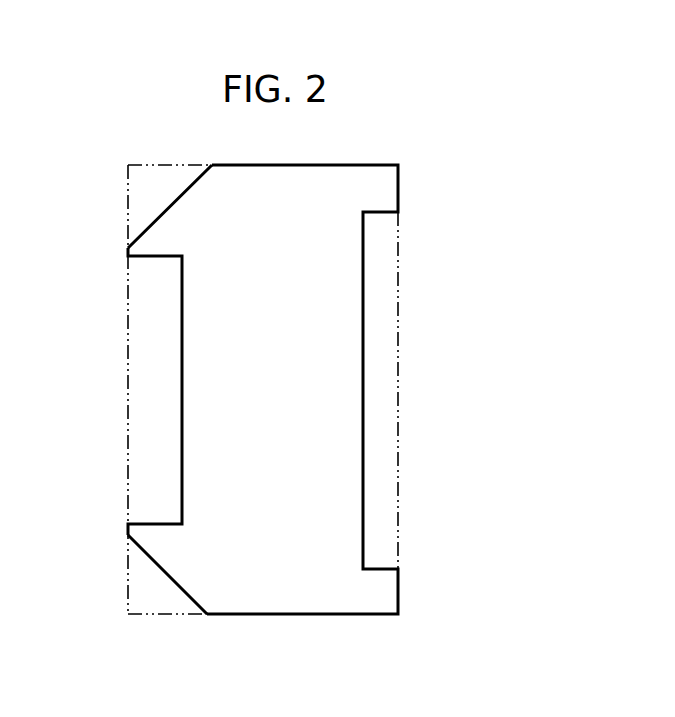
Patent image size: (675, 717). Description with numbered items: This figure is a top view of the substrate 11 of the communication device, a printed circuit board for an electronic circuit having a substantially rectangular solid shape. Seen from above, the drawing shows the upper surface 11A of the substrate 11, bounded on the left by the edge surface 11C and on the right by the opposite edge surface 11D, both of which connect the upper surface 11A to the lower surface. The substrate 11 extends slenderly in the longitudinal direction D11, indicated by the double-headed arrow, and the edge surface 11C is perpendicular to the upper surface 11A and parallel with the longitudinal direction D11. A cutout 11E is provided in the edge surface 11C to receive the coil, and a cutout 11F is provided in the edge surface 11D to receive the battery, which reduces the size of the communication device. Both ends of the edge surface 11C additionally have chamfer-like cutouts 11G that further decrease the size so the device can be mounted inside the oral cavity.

The substrate 11 is at (373, 186).
The upper surface 11A is at (303, 308).
The edge surface 11C is at (128, 248).
The edge surface 11D is at (398, 202).
The cutout 11E is at (182, 390).
The cutout 11F is at (363, 383).
The cutouts 11G is at (170, 205).
The longitudinal direction D11 is at (551, 423).